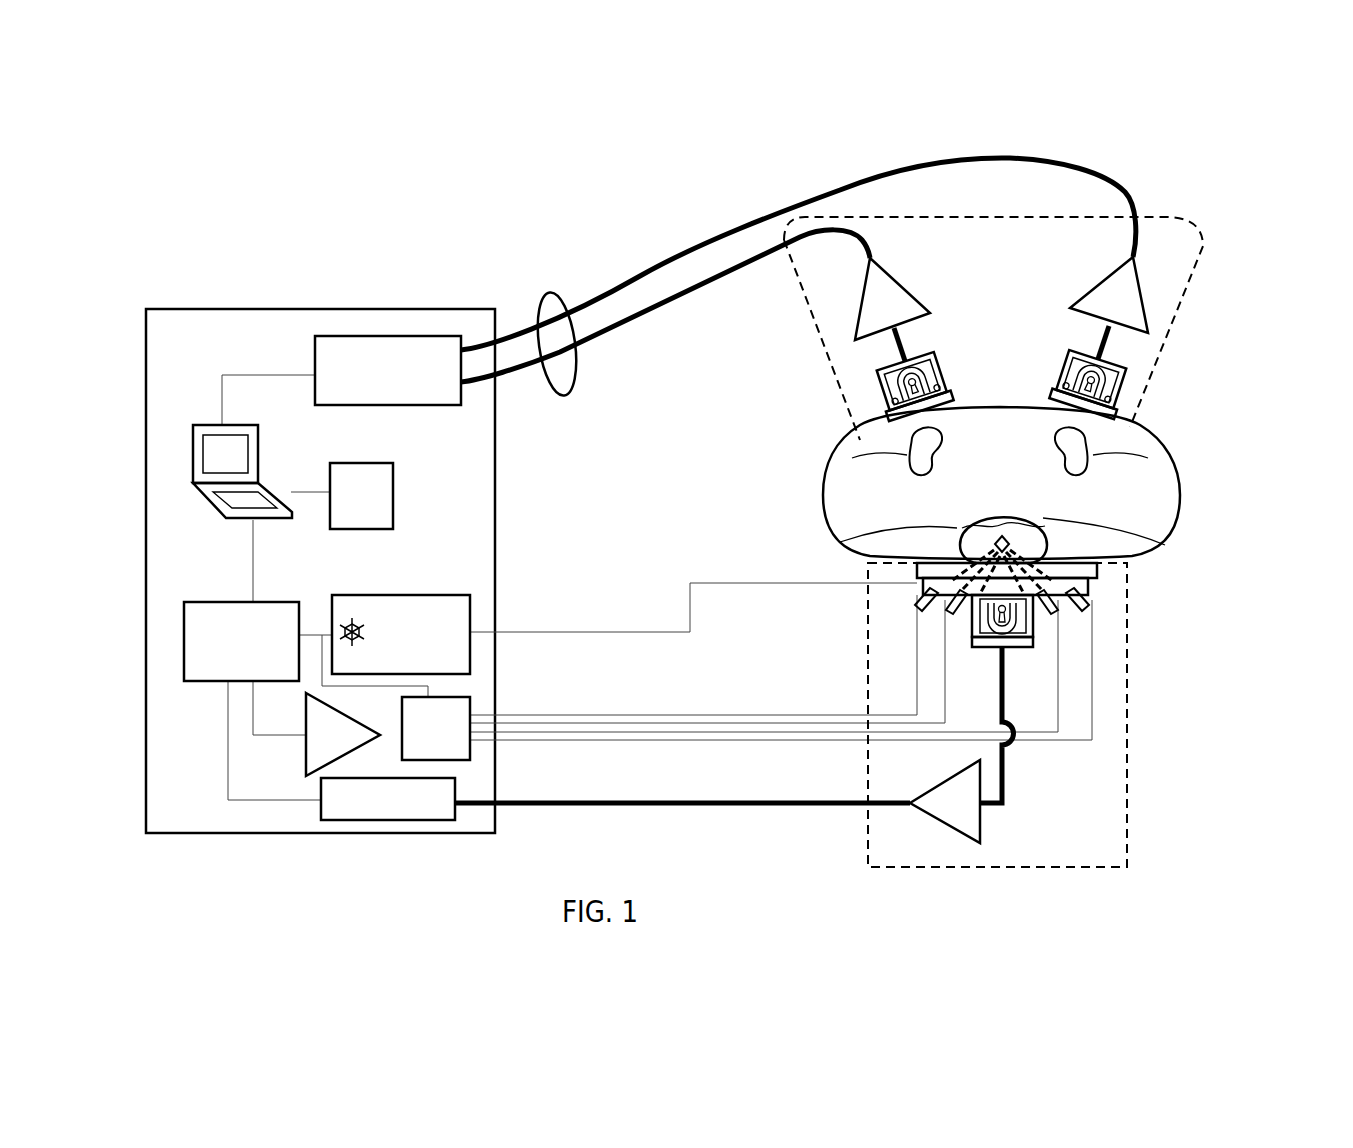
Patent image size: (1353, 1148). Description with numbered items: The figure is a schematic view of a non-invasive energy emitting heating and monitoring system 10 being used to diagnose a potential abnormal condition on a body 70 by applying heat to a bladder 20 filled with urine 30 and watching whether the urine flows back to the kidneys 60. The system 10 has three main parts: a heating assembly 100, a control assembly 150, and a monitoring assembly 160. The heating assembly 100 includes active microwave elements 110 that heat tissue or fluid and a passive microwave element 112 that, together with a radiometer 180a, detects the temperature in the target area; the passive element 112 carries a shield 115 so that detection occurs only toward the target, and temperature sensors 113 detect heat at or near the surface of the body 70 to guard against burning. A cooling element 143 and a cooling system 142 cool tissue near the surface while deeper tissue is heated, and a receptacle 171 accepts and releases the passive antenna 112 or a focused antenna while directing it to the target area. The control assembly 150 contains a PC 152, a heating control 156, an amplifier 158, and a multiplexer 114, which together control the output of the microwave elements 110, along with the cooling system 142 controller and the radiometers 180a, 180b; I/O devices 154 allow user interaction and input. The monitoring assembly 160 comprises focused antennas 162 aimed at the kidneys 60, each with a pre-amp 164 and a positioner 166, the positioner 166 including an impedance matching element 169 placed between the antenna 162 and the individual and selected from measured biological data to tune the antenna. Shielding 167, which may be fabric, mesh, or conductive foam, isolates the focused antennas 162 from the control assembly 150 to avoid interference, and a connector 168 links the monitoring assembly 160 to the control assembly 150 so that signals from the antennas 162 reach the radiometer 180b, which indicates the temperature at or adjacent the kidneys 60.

The non-invasive energy emitting heating and monitoring system 10 is at (612, 165).
The bladder 20 is at (958, 540).
The urine 30 is at (1045, 535).
The kidneys 60 is at (912, 462).
The body 70 is at (822, 505).
The heating assembly 100 is at (1127, 770).
The active microwave elements 110 is at (973, 612).
The passive microwave element 112 is at (1015, 645).
The temperature sensors 113 is at (930, 592).
The multiplexer 114 is at (470, 760).
The shield 115 is at (1030, 648).
The cooling system 142 is at (470, 605).
The cooling element 143 is at (935, 608).
The control assembly 150 is at (330, 309).
The PC 152 is at (195, 425).
The I/O devices 154 is at (393, 492).
The heating control 156 is at (183, 668).
The amplifier 158 is at (306, 772).
The monitoring assembly 160 is at (1160, 348).
The focused antenna 162 is at (878, 372).
The pre-amps 164 is at (860, 303).
The positioner 166 is at (885, 415).
The shielding 167 is at (895, 345).
The connector 168 is at (546, 294).
The impedance matching element 169 is at (880, 428).
The receptacle 171 is at (1025, 662).
The radiometer 180a is at (420, 815).
The radiometer 180b is at (377, 336).